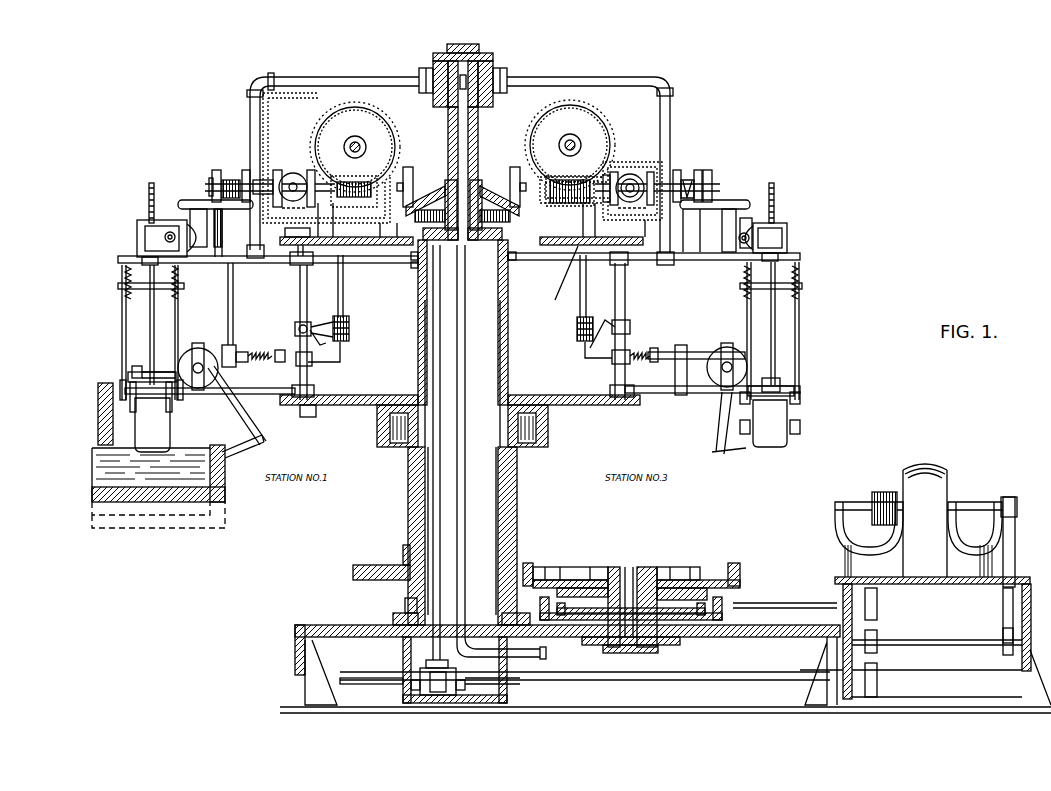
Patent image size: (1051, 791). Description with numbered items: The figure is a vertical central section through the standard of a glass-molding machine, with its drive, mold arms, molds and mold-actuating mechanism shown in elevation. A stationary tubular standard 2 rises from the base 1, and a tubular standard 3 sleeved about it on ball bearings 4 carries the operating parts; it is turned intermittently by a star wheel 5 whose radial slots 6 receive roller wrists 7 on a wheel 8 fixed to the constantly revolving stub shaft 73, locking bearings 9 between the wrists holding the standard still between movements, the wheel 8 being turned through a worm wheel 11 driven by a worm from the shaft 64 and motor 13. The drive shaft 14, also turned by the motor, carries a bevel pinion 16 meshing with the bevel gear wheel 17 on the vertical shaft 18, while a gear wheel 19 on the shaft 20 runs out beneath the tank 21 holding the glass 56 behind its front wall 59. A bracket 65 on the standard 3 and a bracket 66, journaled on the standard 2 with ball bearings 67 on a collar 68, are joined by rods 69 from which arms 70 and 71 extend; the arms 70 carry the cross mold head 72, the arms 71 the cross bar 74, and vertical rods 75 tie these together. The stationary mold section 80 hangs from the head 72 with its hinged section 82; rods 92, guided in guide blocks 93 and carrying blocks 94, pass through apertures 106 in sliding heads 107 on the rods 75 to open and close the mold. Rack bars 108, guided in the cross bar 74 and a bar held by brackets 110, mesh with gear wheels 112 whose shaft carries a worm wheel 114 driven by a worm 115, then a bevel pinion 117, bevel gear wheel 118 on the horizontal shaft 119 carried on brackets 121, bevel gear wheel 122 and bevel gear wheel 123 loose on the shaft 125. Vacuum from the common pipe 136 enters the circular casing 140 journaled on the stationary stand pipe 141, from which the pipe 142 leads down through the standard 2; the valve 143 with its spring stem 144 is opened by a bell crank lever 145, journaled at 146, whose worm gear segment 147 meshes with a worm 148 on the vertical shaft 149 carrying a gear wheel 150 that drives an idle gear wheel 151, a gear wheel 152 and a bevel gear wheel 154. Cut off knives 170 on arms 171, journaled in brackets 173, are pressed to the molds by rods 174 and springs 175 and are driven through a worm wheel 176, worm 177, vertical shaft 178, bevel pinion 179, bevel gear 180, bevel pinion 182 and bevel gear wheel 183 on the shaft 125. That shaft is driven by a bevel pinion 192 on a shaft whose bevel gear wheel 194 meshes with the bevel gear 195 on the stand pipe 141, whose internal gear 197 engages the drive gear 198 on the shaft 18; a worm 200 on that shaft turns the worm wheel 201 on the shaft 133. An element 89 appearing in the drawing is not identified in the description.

The base 1 is at (316, 628).
The tubular standard 2 is at (506, 514).
The tubular standard 3 is at (518, 483).
The ball bearings 4 is at (399, 606).
The star wheel 5 is at (376, 573).
The radial slots 6 is at (551, 571).
The roller wrists 7 is at (530, 565).
The wheel 8 is at (702, 582).
The locking bearings 9 is at (600, 573).
The worm wheel 11 is at (722, 604).
The motor 13 is at (931, 492).
The drive shaft 14 is at (615, 681).
The bevel pinion 16 is at (456, 696).
The bevel gear wheel 17 is at (422, 666).
The vertical shaft 18 is at (434, 412).
The gear wheel 19 is at (428, 692).
The shaft 20 is at (360, 685).
The tank 21 is at (226, 482).
The glass 56 is at (140, 472).
The front wall 59 is at (100, 405).
The shaft 64 is at (800, 606).
The bracket 65 is at (361, 400).
The bracket 66 is at (401, 250).
The ball bearings 67 is at (411, 262).
The collar 68 is at (415, 268).
The rods 69 is at (305, 265).
The arms 70 is at (237, 396).
The arms 71 is at (205, 264).
The cross mold head 72 is at (781, 392).
The stub shaft 73 is at (630, 575).
The cross bar 74 is at (142, 258).
The vertical rods 75 is at (150, 322).
The stationary mold section 80 is at (770, 423).
The hinged mold section 82 is at (151, 412).
The bracket 89 is at (134, 372).
The rods 92 is at (122, 313).
The guide blocks 93 is at (801, 401).
The blocks 94 is at (801, 428).
The apertures 106 is at (127, 284).
The sliding heads 107 is at (127, 292).
The rack bars 108 is at (150, 196).
The brackets 110 is at (140, 232).
The gear wheels 112 is at (169, 231).
The worm wheel 114 is at (750, 240).
The worm 115 is at (752, 232).
The bevel pinion 117 is at (190, 203).
The bevel gear wheel 118 is at (216, 168).
The horizontal shaft 119 is at (210, 180).
The brackets 121 is at (385, 213).
The bevel gear wheel 122 is at (275, 178).
The bevel gear wheel 123 is at (293, 170).
The shaft 125 is at (640, 180).
The shaft 133 is at (366, 150).
The common pipe 136 is at (336, 77).
The circular casing 140 is at (491, 65).
The stand pipe 141 is at (480, 120).
The pipe 142 is at (459, 477).
The valve 143 is at (253, 353).
The stem 144 is at (284, 355).
The bell crank lever 145 is at (301, 325).
The journal 146 is at (312, 328).
The worm gear segment 147 is at (346, 344).
The worm 148 is at (350, 326).
The vertical shaft 149 is at (344, 264).
The gear wheel 150 is at (349, 238).
The idle gear wheel 151 is at (298, 262).
The gear wheel 152 is at (312, 234).
The bevel gear wheel 154 is at (320, 214).
The cut off knives 170 is at (244, 441).
The arms 171 is at (255, 425).
The brackets 173 is at (197, 392).
The rods 174 is at (302, 417).
The springs 175 is at (229, 352).
The worm wheel 176 is at (718, 362).
The worm 177 is at (682, 352).
The vertical shaft 178 is at (680, 205).
The bevel pinion 179 is at (218, 225).
The bevel gear 180 is at (244, 170).
The bevel pinion 182 is at (652, 176).
The bevel gear wheel 183 is at (635, 178).
The bevel pinion 192 is at (629, 170).
The bevel gear wheel 194 is at (408, 176).
The bevel gear 195 is at (411, 208).
The internal gear 197 is at (510, 214).
The drive gear 198 is at (432, 210).
The worm 200 is at (572, 205).
The worm wheel 201 is at (373, 130).